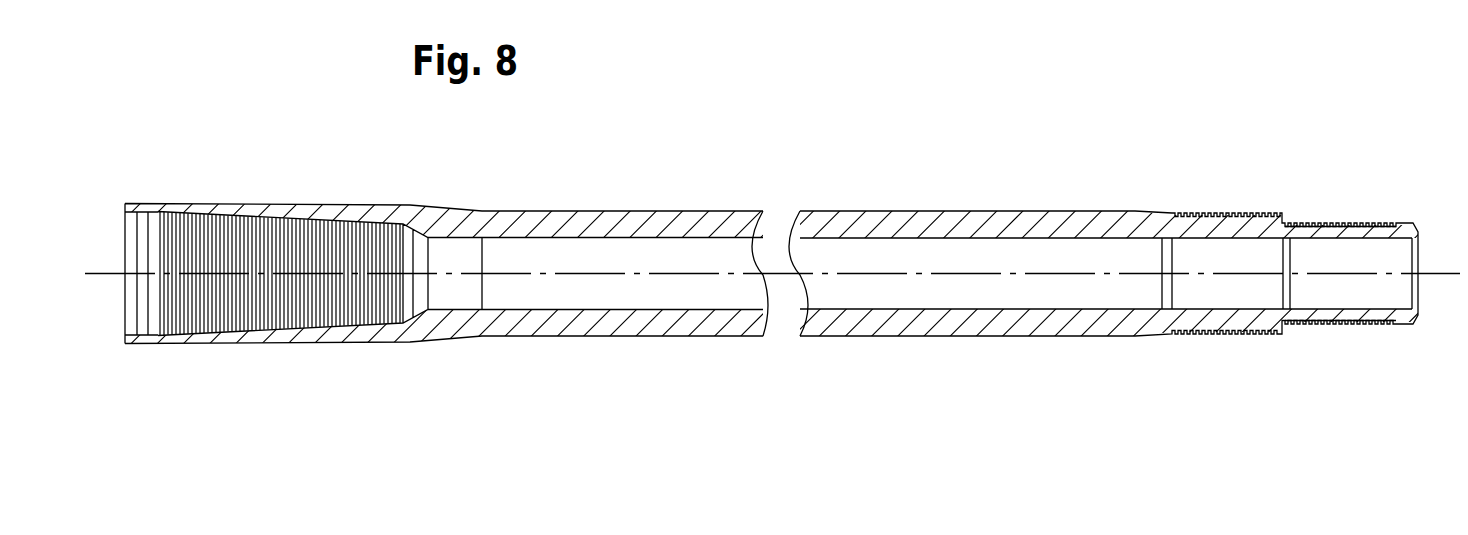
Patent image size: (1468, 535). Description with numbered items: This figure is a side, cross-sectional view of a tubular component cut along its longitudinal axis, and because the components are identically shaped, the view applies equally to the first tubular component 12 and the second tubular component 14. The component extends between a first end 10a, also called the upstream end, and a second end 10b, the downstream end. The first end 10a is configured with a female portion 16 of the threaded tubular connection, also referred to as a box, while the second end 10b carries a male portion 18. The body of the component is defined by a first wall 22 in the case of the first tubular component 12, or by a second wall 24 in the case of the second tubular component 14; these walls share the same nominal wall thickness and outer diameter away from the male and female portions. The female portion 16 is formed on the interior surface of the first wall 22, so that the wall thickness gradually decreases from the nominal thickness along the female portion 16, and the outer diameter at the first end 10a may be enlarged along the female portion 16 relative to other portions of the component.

The first end 10a is at (207, 185).
The second end 10b is at (1330, 195).
The first tubular component 12 is at (650, 173).
The second tubular component 14 is at (734, 244).
The female portion 16 is at (203, 213).
The male portion 18 is at (1363, 222).
The first wall 22 is at (910, 222).
The second wall 24 is at (1118, 236).